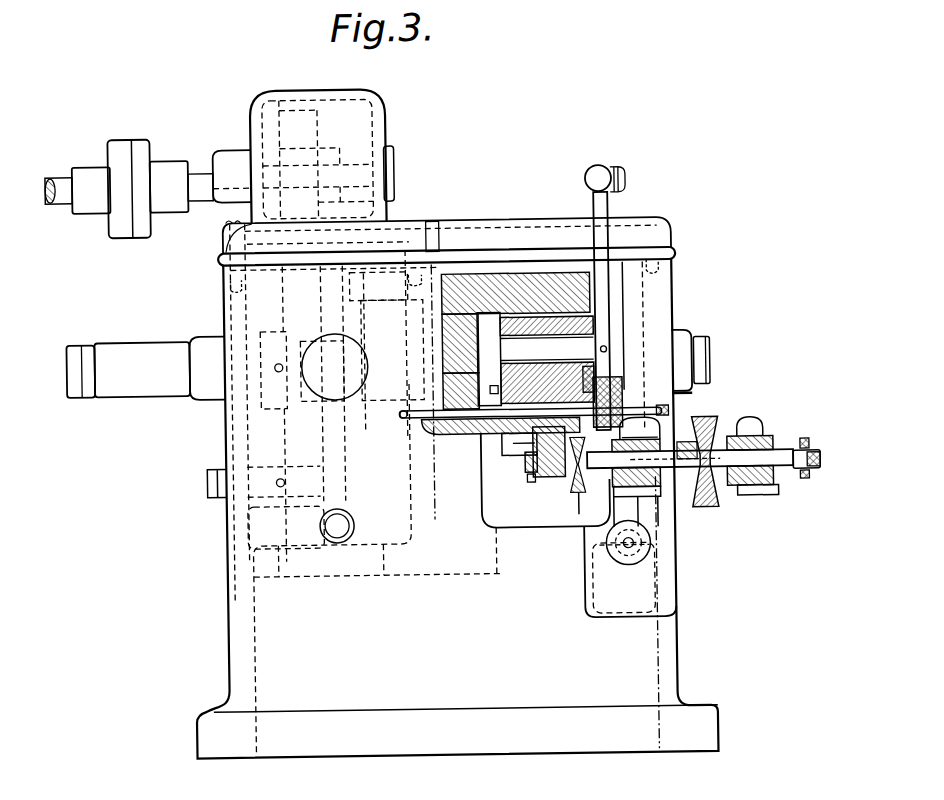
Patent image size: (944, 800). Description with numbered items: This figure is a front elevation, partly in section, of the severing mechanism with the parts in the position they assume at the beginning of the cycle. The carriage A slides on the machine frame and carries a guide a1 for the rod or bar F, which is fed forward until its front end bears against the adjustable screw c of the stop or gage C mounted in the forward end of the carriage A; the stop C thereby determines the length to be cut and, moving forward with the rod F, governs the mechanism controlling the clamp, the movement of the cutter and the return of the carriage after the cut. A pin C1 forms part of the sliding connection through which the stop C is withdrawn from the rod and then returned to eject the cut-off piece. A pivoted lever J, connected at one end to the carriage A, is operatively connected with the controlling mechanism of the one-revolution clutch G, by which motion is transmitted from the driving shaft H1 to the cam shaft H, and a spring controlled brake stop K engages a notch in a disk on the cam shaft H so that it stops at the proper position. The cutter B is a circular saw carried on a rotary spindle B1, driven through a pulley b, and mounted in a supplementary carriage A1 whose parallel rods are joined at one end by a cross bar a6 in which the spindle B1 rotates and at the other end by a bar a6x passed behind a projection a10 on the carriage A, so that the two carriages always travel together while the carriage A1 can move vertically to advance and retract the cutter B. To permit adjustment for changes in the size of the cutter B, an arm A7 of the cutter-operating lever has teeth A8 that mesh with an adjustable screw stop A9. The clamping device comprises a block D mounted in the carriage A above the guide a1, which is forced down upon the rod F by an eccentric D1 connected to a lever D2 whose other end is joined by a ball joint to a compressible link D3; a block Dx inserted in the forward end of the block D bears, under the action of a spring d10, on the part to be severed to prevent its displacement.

The one-revolution clutch G is at (295, 306).
The spring controlled brake stop K is at (356, 277).
The driving shaft H1 is at (205, 182).
The cam shaft H is at (190, 395).
The compressible link D3 is at (629, 182).
The lever D2 is at (606, 281).
The eccentric D1 is at (595, 366).
The clamping block D is at (652, 356).
The block Dx is at (595, 339).
The spring d10 is at (602, 380).
The rod or bar F is at (412, 418).
The carriage A is at (472, 434).
The guide a1 is at (510, 429).
The pivoted lever J is at (523, 442).
The cutter B is at (570, 480).
The bar a6x is at (536, 479).
The projection a10 is at (690, 462).
The arm A7 is at (625, 508).
The teeth A8 is at (606, 551).
The adjustable screw stop A9 is at (648, 556).
The pulley b is at (703, 500).
The adjustable screw c is at (673, 408).
The stop or gage C is at (629, 394).
The pin C1 is at (670, 417).
The supplementary carriage A1 is at (727, 484).
The rotary spindle B1 is at (775, 468).
The cross bar a6 is at (805, 453).